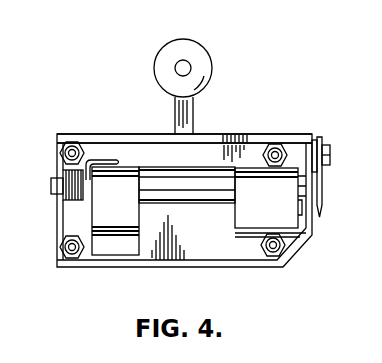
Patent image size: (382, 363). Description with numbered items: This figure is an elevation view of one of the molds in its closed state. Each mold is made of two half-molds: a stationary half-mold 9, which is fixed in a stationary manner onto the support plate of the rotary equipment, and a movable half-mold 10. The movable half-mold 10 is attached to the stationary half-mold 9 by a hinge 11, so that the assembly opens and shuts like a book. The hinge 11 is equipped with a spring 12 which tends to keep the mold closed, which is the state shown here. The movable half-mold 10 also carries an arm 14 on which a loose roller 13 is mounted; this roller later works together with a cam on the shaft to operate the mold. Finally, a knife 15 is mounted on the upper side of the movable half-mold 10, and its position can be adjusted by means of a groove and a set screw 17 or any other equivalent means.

The stationary half-mold 9 is at (185, 256).
The movable half-mold 10 is at (157, 148).
The hinge 11 is at (191, 193).
The spring 12 is at (62, 183).
The loose roller 13 is at (202, 54).
The arm 14 is at (191, 114).
The knife 15 is at (320, 195).
The set screw 17 is at (327, 159).